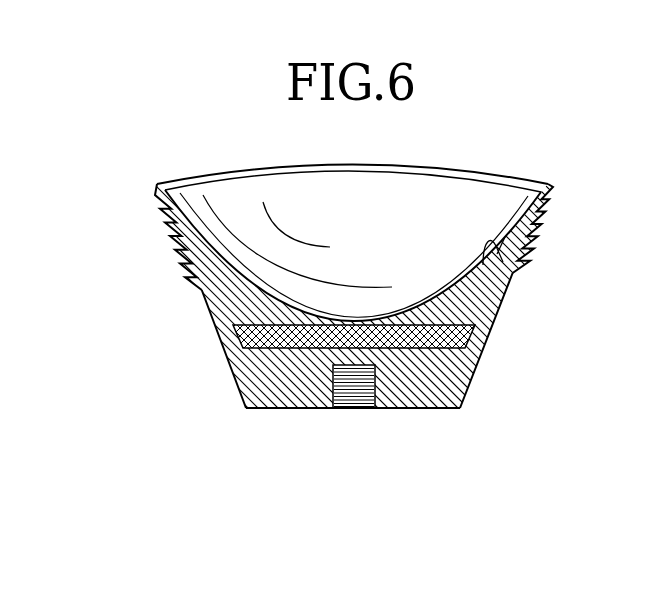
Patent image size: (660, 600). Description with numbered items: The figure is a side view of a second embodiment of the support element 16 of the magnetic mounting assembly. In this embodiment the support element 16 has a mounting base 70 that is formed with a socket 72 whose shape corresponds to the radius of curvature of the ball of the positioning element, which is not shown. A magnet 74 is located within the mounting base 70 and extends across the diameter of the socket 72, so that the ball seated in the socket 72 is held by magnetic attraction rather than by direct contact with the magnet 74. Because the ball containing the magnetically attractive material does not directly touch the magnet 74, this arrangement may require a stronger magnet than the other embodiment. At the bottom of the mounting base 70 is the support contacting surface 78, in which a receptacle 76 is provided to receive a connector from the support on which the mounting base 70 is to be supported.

The support element 16 is at (214, 373).
The mounting base 70 is at (450, 385).
The socket 72 is at (521, 266).
The magnet 74 is at (236, 332).
The receptacle 76 is at (344, 392).
The support contacting surface 78 is at (277, 408).